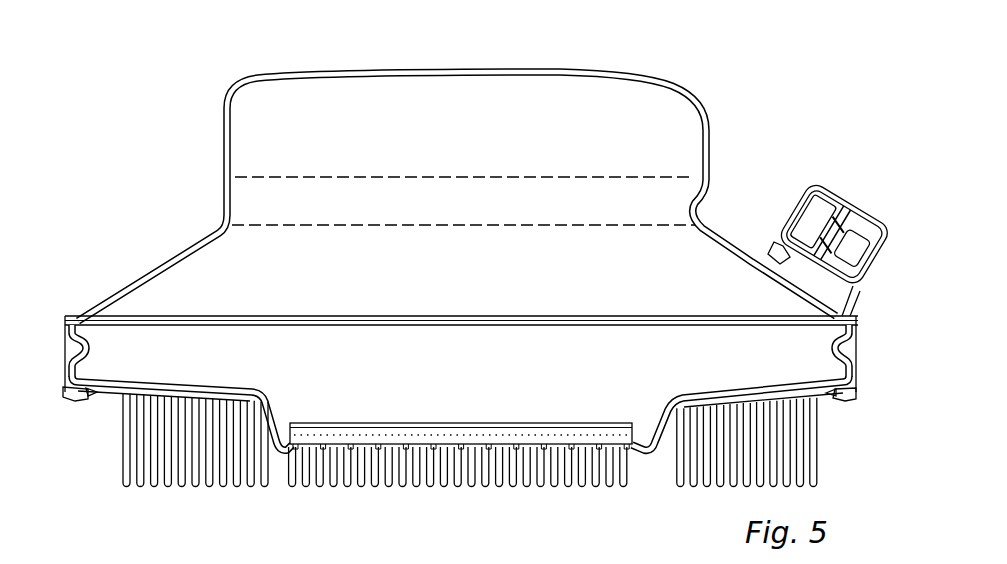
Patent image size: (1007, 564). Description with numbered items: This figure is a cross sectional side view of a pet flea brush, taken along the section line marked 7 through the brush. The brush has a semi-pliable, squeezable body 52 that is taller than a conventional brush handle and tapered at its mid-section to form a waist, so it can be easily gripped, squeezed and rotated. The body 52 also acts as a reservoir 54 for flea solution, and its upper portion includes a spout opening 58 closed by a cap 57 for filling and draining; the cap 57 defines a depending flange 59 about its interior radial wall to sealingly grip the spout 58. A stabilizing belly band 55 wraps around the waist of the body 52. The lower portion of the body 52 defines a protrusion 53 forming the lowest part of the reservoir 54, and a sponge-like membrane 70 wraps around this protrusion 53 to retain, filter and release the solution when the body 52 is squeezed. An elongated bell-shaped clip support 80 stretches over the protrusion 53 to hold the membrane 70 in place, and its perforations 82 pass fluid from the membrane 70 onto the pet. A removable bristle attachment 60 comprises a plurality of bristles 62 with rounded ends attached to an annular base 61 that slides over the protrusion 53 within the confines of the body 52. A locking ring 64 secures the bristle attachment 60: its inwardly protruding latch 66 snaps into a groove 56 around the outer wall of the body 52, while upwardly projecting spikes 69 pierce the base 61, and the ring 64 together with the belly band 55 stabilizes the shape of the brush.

The section line 7- 7 is at (617, 70).
The body 52 is at (228, 100).
The protrusion 53 is at (660, 440).
The reservoir 54 is at (280, 128).
The stabilizing belly band 55 is at (675, 176).
The groove 56 is at (65, 337).
The cap 57 is at (800, 194).
The spout opening 58 is at (832, 194).
The depending flange 59 is at (860, 208).
The bristle attachment 60 is at (108, 439).
The annular base 61 is at (95, 400).
The bristles 62 is at (547, 490).
The locking ring 64 is at (857, 343).
The latch 66 is at (78, 357).
The spikes 69 is at (845, 393).
The membrane 70 is at (357, 433).
The clip support 80 is at (303, 450).
The perforations 82 is at (373, 445).